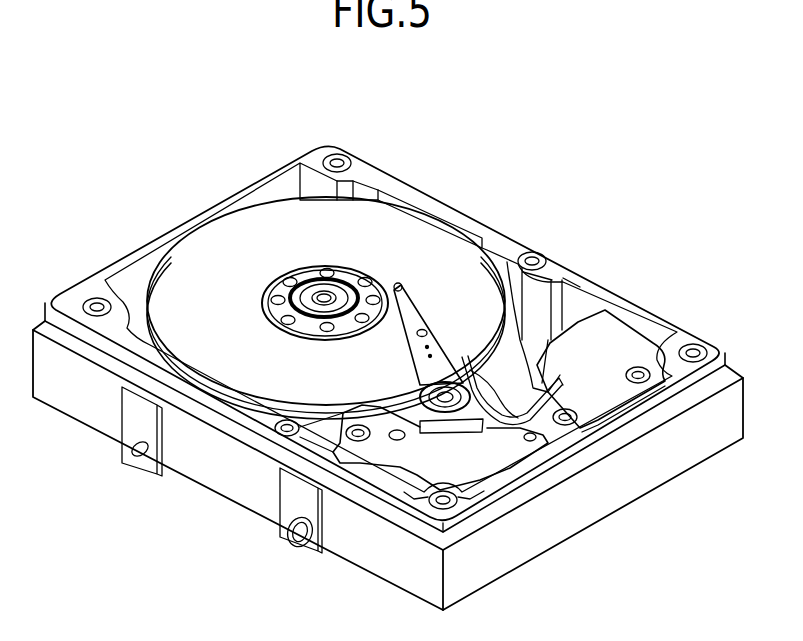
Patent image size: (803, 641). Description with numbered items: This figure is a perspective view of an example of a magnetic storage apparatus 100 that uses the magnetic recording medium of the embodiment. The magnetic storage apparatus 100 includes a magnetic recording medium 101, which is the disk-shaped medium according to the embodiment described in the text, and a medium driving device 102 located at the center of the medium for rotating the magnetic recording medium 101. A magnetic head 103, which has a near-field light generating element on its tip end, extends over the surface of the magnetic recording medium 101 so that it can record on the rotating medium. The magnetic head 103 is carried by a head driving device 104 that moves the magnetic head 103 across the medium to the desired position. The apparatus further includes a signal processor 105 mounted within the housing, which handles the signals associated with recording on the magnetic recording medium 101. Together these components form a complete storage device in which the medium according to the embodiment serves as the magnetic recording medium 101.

The magnetic storage apparatus 100 is at (558, 247).
The magnetic recording medium 101 is at (368, 220).
The medium driving device 102 is at (324, 297).
The magnetic head 103 is at (393, 285).
The head driving device 104 is at (478, 455).
The signal processor 105 is at (608, 350).